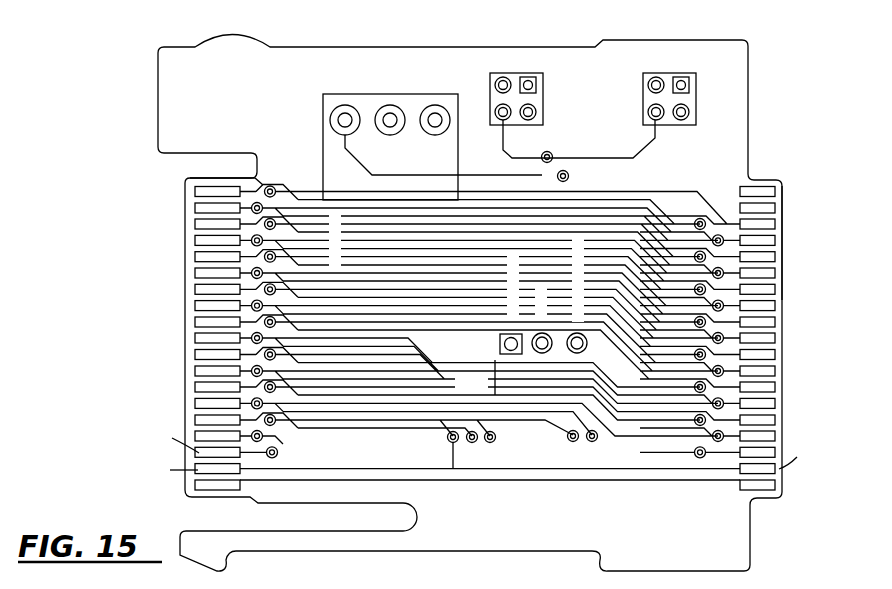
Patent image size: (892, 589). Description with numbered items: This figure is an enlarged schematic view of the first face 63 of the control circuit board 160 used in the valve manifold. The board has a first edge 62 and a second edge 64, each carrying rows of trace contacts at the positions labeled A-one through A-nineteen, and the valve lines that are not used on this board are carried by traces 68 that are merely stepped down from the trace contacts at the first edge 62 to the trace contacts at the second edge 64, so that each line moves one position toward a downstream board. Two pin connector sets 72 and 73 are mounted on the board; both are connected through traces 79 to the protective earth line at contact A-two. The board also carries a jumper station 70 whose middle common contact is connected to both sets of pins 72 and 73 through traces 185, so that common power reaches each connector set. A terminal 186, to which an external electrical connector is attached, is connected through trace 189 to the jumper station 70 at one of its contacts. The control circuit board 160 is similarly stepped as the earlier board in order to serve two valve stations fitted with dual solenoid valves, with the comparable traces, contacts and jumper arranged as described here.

The control circuit board 160 is at (300, 66).
The first edge 62 is at (782, 185).
The second edge 64 is at (184, 302).
The first face 63 is at (653, 463).
The traces 68 is at (338, 405).
The traces 79 is at (432, 467).
The jumper station 70 is at (514, 360).
The terminal 186 is at (330, 120).
The pin connector set 72 is at (521, 64).
The pin connector set 73 is at (670, 64).
The traces 185 is at (499, 150).
The trace 189 is at (545, 176).